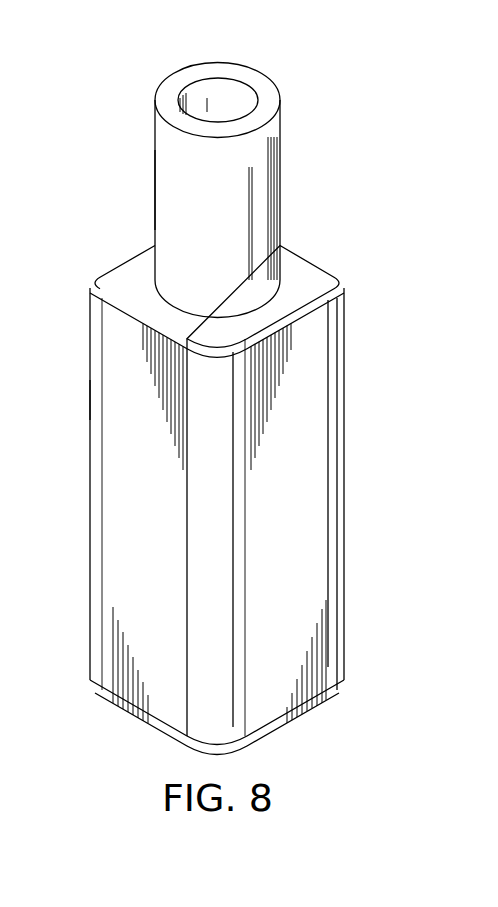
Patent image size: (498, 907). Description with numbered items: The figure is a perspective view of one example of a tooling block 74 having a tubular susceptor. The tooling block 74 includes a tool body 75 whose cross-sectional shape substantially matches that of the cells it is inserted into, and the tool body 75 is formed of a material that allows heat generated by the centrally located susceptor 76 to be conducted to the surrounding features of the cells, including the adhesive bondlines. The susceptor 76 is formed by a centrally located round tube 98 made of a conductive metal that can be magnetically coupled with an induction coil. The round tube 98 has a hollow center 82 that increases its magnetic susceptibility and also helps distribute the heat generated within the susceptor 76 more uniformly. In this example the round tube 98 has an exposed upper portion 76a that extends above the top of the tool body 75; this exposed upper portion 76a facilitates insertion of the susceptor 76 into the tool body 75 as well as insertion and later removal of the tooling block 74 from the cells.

The tooling block 74 is at (88, 524).
The tool body 75 is at (108, 404).
The susceptor 76 is at (130, 132).
The exposed upper portion 76a is at (158, 190).
The hollow center 82 is at (237, 93).
The round tube 98 is at (282, 201).